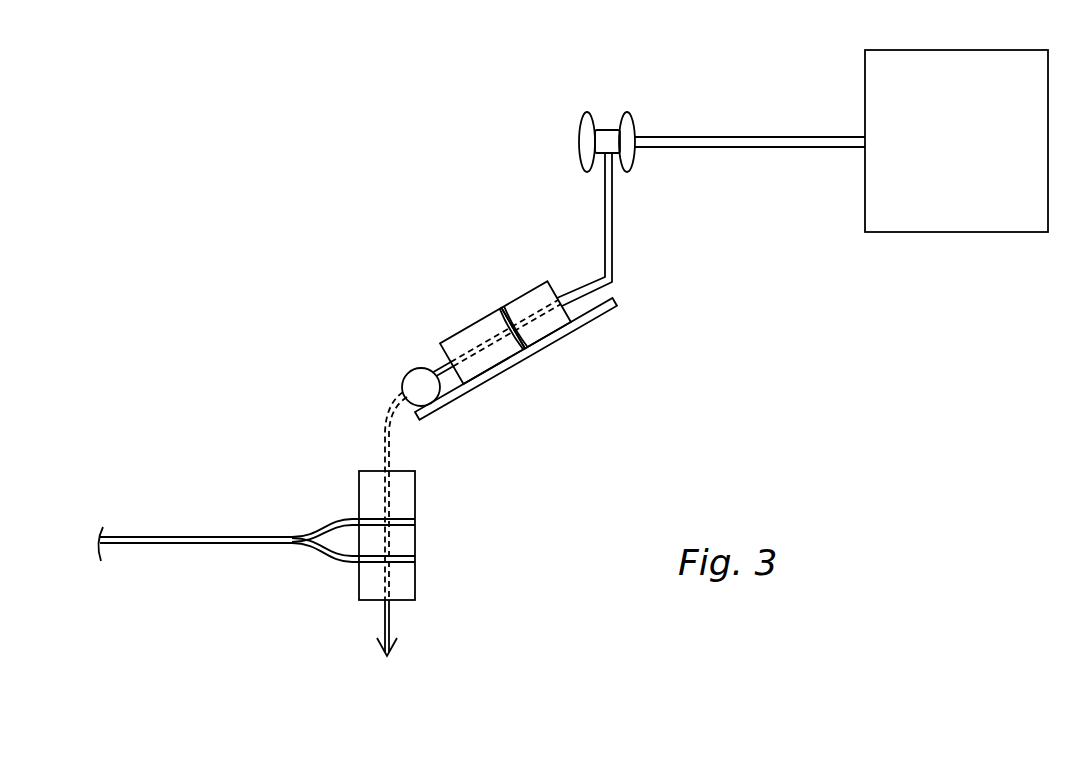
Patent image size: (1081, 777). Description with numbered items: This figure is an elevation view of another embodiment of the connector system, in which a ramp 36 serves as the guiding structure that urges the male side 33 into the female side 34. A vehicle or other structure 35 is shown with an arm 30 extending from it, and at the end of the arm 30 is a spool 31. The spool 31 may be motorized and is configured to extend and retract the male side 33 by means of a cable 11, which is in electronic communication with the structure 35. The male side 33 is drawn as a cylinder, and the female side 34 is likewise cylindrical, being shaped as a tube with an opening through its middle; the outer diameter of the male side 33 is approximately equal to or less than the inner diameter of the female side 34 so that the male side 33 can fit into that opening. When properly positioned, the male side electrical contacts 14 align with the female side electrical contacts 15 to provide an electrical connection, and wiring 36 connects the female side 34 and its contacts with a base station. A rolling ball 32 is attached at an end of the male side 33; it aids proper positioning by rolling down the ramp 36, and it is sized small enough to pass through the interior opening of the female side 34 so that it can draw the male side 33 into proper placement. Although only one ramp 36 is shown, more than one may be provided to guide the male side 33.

The cable 11 is at (613, 230).
The male side electrical contacts 14 is at (503, 307).
The female side electrical contacts 15 is at (415, 522).
The arm 30 is at (749, 137).
The spool 31 is at (583, 135).
The rolling ball 32 is at (403, 383).
The male side 33 is at (532, 290).
The female side 34 is at (359, 586).
The vehicle or other structure 35 is at (937, 143).
The ramp 36 is at (585, 324).